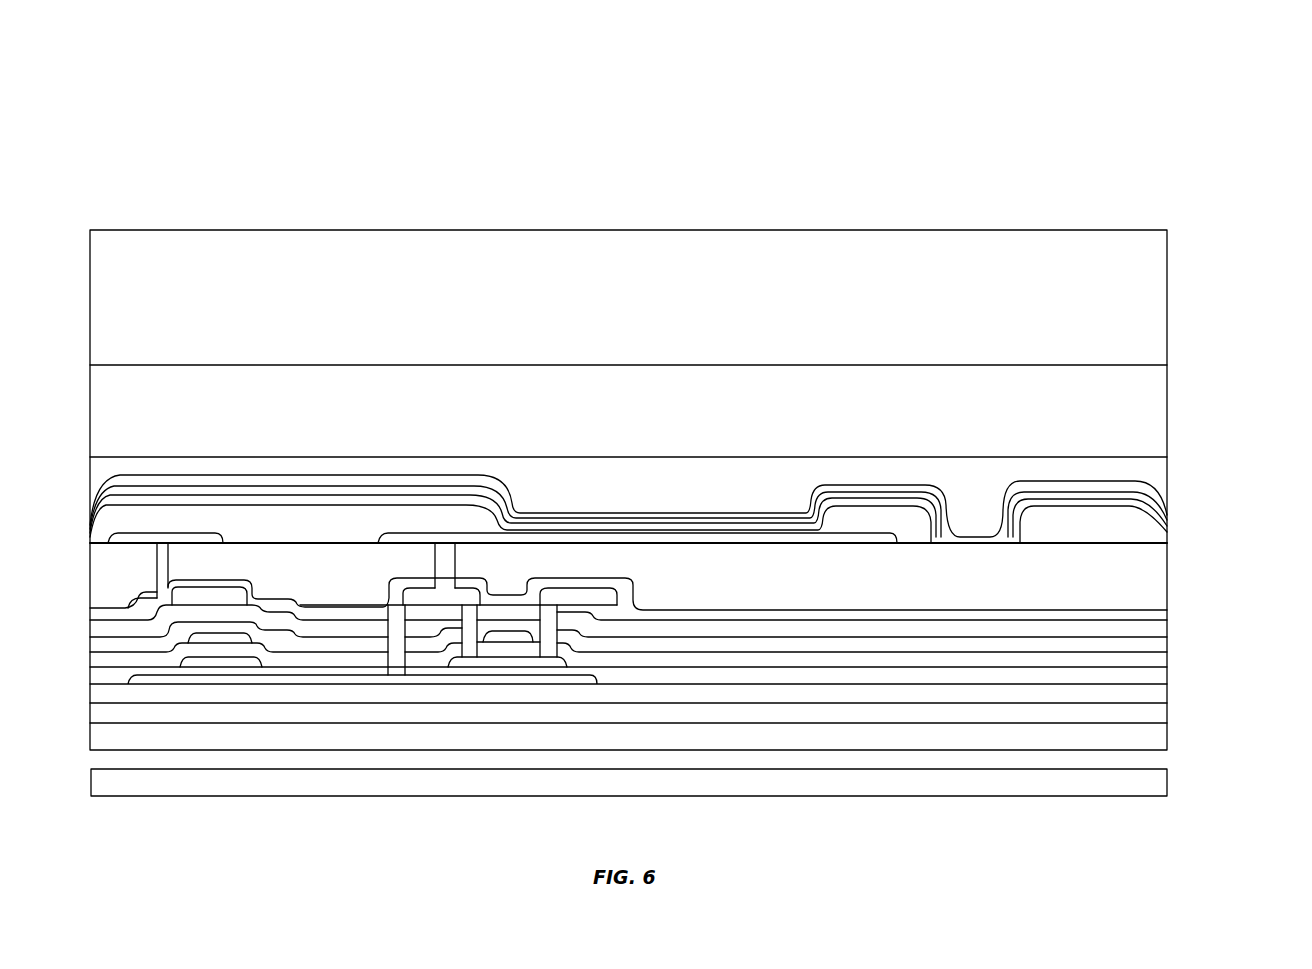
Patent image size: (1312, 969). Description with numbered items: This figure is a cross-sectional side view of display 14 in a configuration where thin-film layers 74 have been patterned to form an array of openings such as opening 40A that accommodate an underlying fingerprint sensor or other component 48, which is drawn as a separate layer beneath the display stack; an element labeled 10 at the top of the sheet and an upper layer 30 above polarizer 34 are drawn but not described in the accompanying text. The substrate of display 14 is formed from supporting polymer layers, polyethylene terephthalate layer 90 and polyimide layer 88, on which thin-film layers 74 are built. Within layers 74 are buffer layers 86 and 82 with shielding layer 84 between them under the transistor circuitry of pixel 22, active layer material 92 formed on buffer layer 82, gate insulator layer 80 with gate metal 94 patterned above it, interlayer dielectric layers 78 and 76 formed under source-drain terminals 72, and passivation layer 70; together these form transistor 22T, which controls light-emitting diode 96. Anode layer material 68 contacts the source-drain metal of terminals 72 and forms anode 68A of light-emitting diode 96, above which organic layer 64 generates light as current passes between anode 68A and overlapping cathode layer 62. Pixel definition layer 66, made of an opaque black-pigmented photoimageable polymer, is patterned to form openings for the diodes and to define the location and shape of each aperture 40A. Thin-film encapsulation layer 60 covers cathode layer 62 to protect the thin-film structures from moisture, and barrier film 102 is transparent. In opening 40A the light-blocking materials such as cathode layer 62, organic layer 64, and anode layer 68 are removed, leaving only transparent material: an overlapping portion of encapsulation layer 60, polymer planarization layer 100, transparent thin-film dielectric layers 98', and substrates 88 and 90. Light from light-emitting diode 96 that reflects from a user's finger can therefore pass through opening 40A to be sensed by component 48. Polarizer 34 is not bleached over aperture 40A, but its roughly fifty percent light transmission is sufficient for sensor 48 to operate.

The electronic device display 10 is at (147, 88).
The display 14 is at (1250, 230).
The pixel 22 is at (762, 180).
The transistor 22T is at (640, 583).
The cover layer 30 is at (98, 305).
The polarizer 34 is at (98, 388).
The opening 40A is at (991, 476).
The component 48 is at (413, 785).
The thin-film encapsulation layer 60 is at (132, 478).
The cathode layer 62 is at (122, 488).
The organic layer 64 is at (115, 497).
The pixel definition layer 66 is at (100, 507).
The anode layer material 68 is at (110, 538).
The anode 68A is at (472, 540).
The passivation layer 70 is at (125, 598).
The source-drain terminals 72 is at (130, 606).
The thin-film layers 74 is at (1212, 500).
The interlayer dielectric layer 76 is at (100, 611).
The interlayer dielectric layer 78 is at (100, 622).
The gate insulator layer 80 is at (100, 638).
The buffer layer 82 is at (100, 654).
The shielding layer 84 is at (293, 682).
The buffer layer 86 is at (100, 703).
The polyimide layer 88 is at (100, 723).
The polyethylene terephthalate layer 90 is at (100, 740).
The active layer material 92 is at (205, 660).
The gate metal 94 is at (232, 648).
The light-emitting diode 96 is at (790, 490).
The transparent thin-film dielectric layers 98' is at (1199, 680).
The polymer planarization layer 100 is at (100, 557).
The barrier film 102 is at (1163, 470).